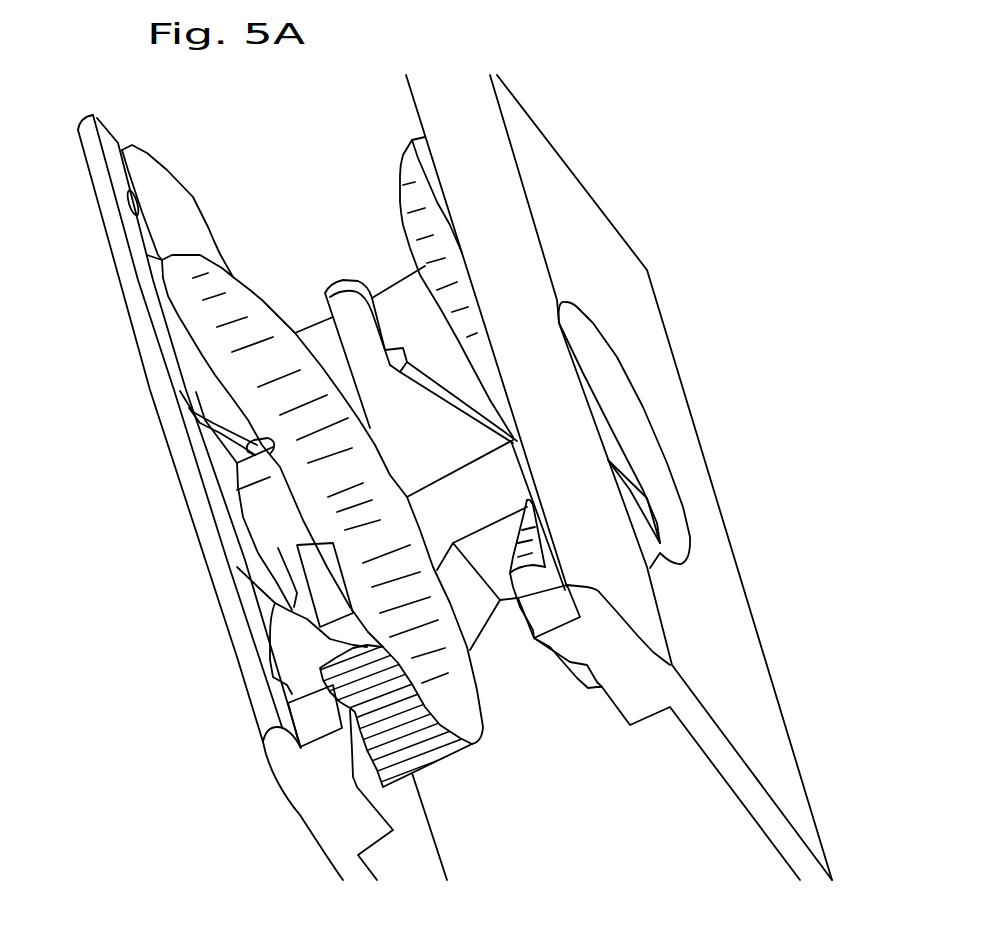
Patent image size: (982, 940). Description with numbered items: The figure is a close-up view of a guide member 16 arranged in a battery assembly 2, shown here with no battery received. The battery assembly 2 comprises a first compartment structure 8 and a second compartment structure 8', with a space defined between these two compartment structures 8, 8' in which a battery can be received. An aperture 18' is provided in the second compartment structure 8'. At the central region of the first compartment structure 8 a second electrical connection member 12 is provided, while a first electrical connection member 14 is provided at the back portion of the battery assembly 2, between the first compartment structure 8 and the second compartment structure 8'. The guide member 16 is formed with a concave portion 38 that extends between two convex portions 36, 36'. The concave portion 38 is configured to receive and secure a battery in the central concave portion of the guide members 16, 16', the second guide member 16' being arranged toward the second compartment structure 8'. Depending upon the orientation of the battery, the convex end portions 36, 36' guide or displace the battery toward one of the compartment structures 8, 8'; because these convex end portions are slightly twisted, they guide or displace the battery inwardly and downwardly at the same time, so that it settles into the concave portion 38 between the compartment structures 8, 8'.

The battery assembly 2 is at (148, 792).
The first compartment structure 8 is at (210, 497).
The second compartment structure 8' is at (661, 477).
The second electrical connection member 12 is at (320, 572).
The first electrical connection member 14 is at (386, 352).
The guide member 16 is at (323, 512).
The guide member 16' is at (548, 477).
The aperture 18' is at (652, 435).
The convex portion 36 is at (265, 502).
The convex portion 36' is at (276, 657).
The concave portion 38 is at (480, 703).